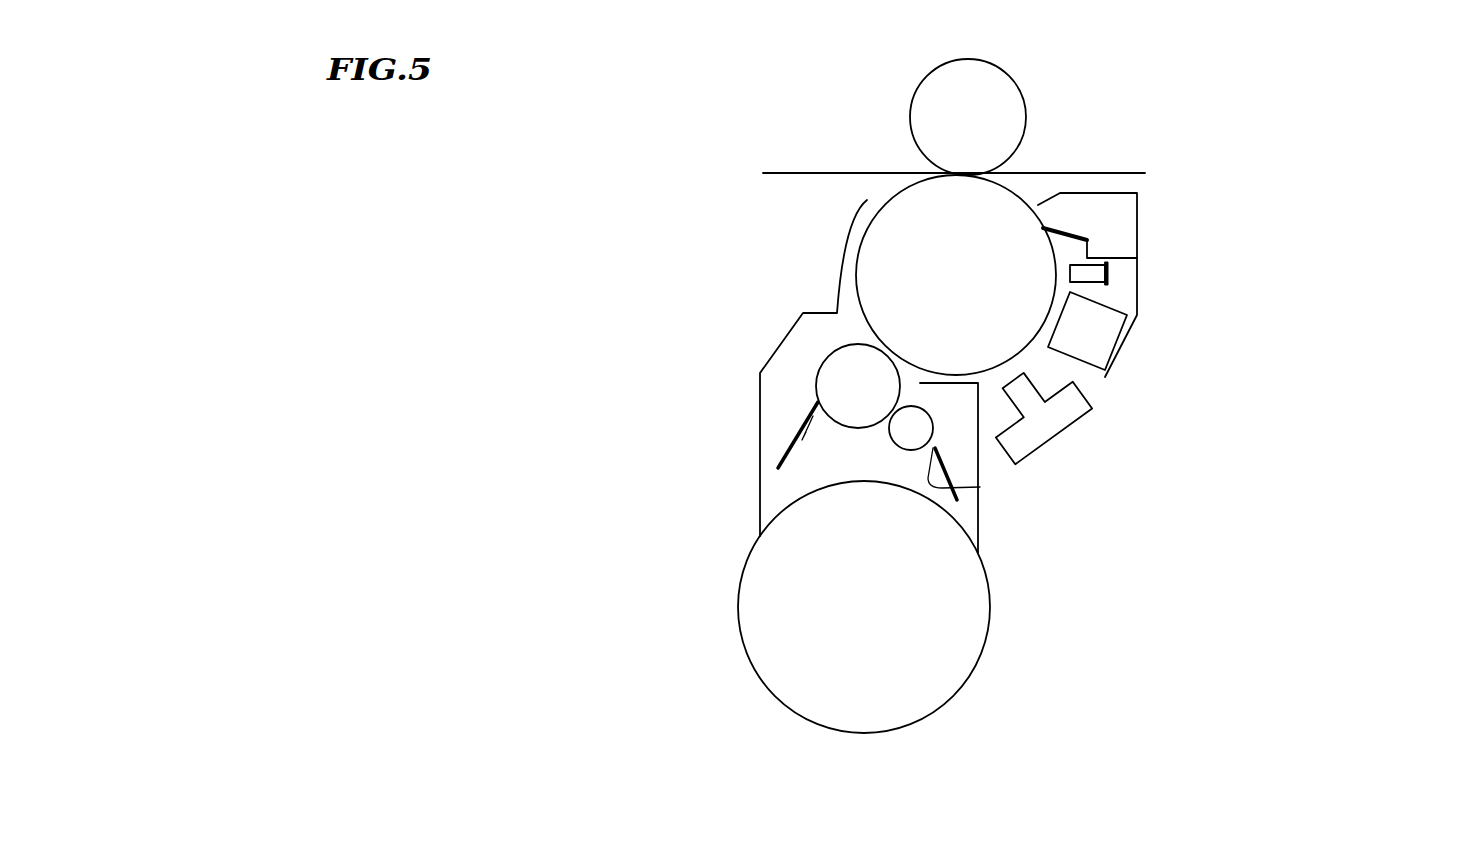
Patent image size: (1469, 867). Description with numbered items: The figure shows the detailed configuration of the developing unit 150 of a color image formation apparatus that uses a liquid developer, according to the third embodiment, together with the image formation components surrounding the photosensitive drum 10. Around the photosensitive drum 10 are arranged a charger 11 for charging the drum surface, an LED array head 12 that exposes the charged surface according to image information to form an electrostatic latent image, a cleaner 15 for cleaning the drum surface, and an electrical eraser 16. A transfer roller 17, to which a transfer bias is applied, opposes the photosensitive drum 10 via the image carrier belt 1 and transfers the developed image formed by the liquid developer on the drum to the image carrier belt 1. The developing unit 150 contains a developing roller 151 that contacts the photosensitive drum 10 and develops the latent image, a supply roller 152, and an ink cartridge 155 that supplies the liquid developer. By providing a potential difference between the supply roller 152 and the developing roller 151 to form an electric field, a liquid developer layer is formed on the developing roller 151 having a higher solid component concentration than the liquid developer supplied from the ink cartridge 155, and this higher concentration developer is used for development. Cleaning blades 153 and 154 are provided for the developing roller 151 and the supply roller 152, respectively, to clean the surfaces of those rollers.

The image carrier belt 1 is at (863, 172).
The photosensitive drum 10 is at (892, 268).
The charger 11 is at (1098, 347).
The LED array head 12 is at (1067, 418).
The cleaner 15 is at (1120, 230).
The electrical eraser 16 is at (1108, 272).
The transfer roller 17 is at (992, 98).
The developing unit 150 is at (340, 465).
The developing roller 151 is at (833, 385).
The supply roller 152 is at (905, 442).
The cleaning blade 153 is at (805, 430).
The cleaning blade 154 is at (980, 487).
The ink cartridge 155 is at (808, 678).